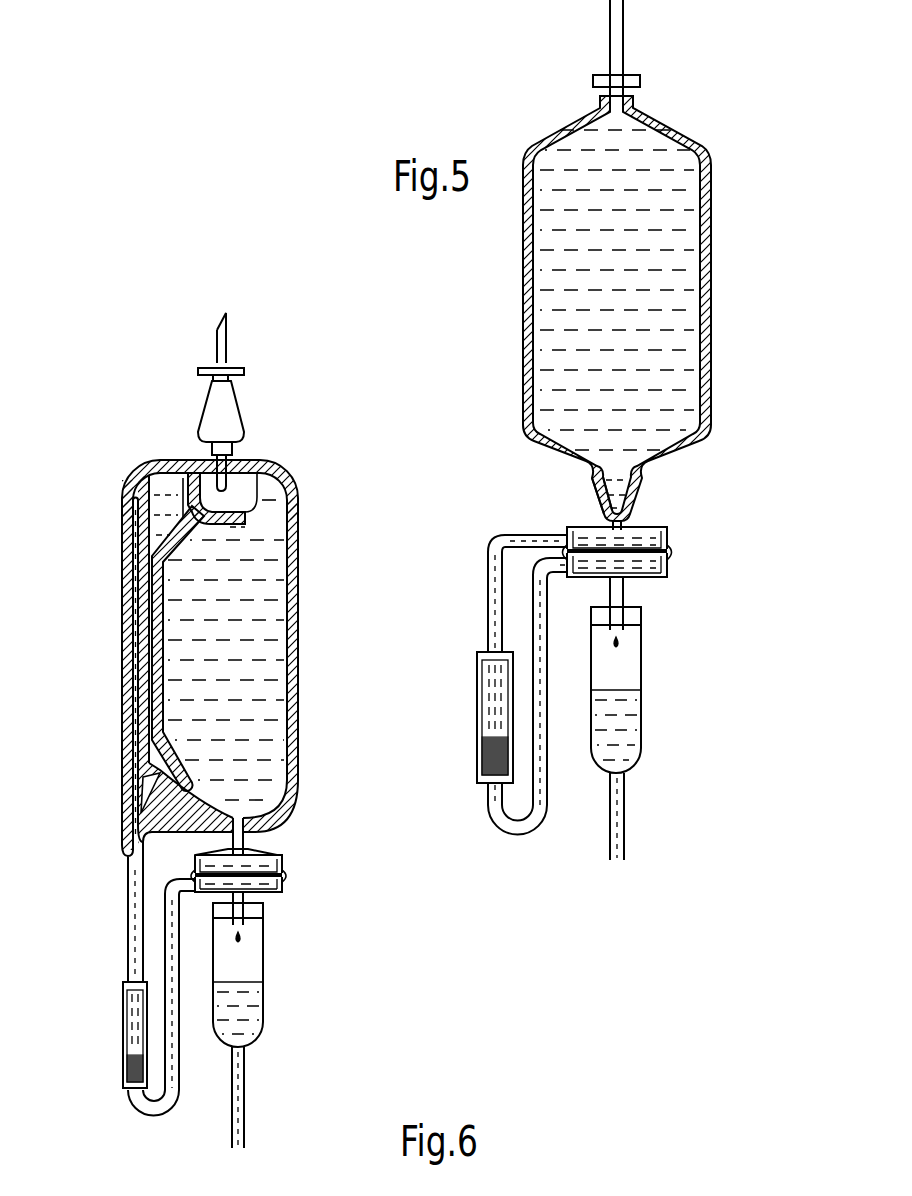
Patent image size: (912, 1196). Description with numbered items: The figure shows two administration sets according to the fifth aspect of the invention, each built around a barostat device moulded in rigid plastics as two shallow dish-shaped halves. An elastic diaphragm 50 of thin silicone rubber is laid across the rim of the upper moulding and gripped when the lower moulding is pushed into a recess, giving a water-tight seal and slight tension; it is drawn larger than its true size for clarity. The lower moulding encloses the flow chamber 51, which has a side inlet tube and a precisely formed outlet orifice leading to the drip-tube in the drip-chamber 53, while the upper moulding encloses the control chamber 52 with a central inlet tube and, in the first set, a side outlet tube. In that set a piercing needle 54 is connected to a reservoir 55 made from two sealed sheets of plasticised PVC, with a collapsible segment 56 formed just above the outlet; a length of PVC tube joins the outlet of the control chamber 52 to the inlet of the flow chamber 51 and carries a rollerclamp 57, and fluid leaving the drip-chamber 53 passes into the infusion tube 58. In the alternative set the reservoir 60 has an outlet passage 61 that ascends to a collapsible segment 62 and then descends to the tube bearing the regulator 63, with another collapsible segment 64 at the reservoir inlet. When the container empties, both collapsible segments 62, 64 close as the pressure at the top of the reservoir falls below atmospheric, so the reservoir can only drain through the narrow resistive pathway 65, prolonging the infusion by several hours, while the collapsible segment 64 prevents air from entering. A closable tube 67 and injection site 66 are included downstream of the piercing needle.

In FIG. 5, the elastic diaphragm 50 is at (640, 552).
In FIG. 6, the elastic diaphragm 50 is at (270, 880).
In FIG. 5, the flow chamber 51 is at (640, 568).
In FIG. 6, the flow chamber 51 is at (262, 888).
In FIG. 5, the control chamber 52 is at (630, 535).
In FIG. 6, the control chamber 52 is at (272, 858).
In FIG. 5, the drip-chamber 53 is at (625, 708).
In FIG. 6, the drip-chamber 53 is at (245, 1028).
In FIG. 5, the piercing needle 54 is at (616, 55).
In FIG. 5, the reservoir 55 is at (655, 202).
In FIG. 5, the collapsible segment 56 is at (607, 485).
In FIG. 5, the rollerclamp 57 is at (477, 698).
In FIG. 5, the infusion tube 58 is at (617, 820).
In FIG. 6, the infusion tube 58 is at (238, 1096).
In FIG. 6, the reservoir 60 is at (250, 620).
In FIG. 6, the outlet passage 61 is at (150, 622).
In FIG. 6, the collapsible segment 62 is at (165, 510).
In FIG. 6, the regulator 63 is at (123, 1028).
In FIG. 6, the collapsible segment 64 is at (232, 500).
In FIG. 6, the resistive pathway 65 is at (150, 790).
In FIG. 6, the injection site 66 is at (220, 428).
In FIG. 6, the closable tube 67 is at (218, 392).